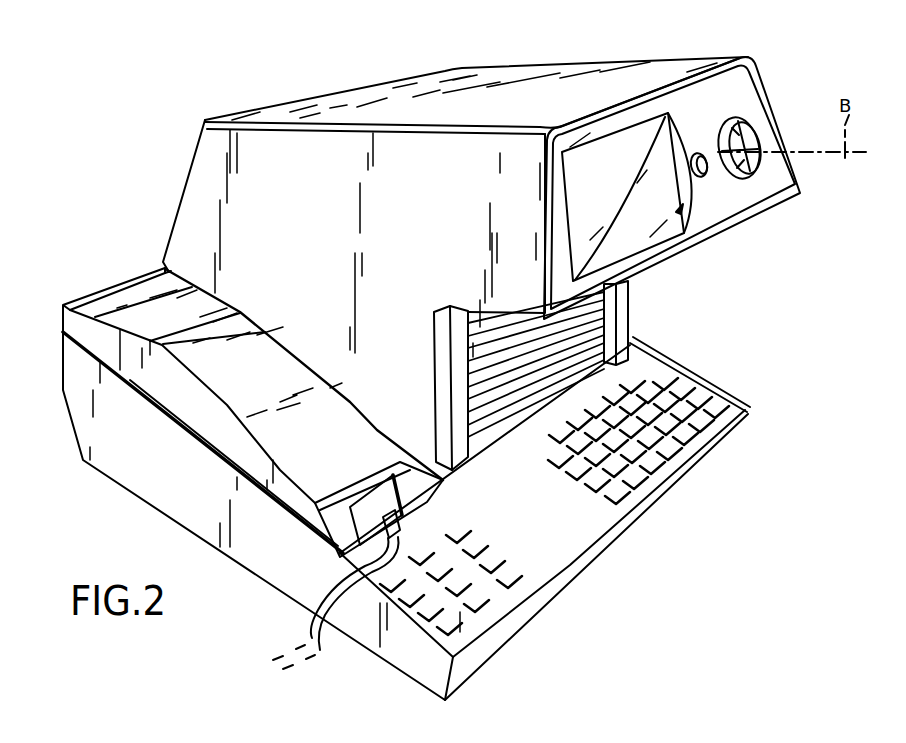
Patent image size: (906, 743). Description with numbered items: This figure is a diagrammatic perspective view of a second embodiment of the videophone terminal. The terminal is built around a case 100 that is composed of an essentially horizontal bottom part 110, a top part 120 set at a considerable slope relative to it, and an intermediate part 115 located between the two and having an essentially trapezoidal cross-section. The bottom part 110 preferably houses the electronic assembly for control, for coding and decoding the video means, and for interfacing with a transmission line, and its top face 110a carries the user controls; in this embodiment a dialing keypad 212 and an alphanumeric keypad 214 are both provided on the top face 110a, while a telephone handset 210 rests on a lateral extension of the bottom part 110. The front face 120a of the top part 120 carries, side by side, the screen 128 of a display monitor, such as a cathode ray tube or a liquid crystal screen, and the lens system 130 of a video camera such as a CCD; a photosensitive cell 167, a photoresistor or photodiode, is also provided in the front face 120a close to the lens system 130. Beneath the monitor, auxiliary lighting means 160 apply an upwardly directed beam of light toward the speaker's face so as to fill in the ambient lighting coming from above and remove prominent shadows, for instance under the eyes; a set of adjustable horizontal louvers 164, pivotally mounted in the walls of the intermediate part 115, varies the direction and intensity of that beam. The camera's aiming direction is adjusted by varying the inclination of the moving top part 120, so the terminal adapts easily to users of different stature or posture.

The case 100 is at (207, 100).
The bottom part 110 is at (283, 558).
The top face 110a is at (543, 563).
The intermediate part 115 is at (404, 365).
The top part 120 is at (402, 223).
The front face 120a is at (727, 88).
The screen 128 is at (635, 137).
The lens system 130 is at (752, 117).
The auxiliary lighting means 160 is at (618, 301).
The adjustable horizontal louvers 164 is at (600, 330).
The photosensitive cell 167 is at (707, 177).
The telephone handset 210 is at (133, 296).
The dialing keypad 212 is at (504, 628).
The alphanumeric keypad 214 is at (652, 492).